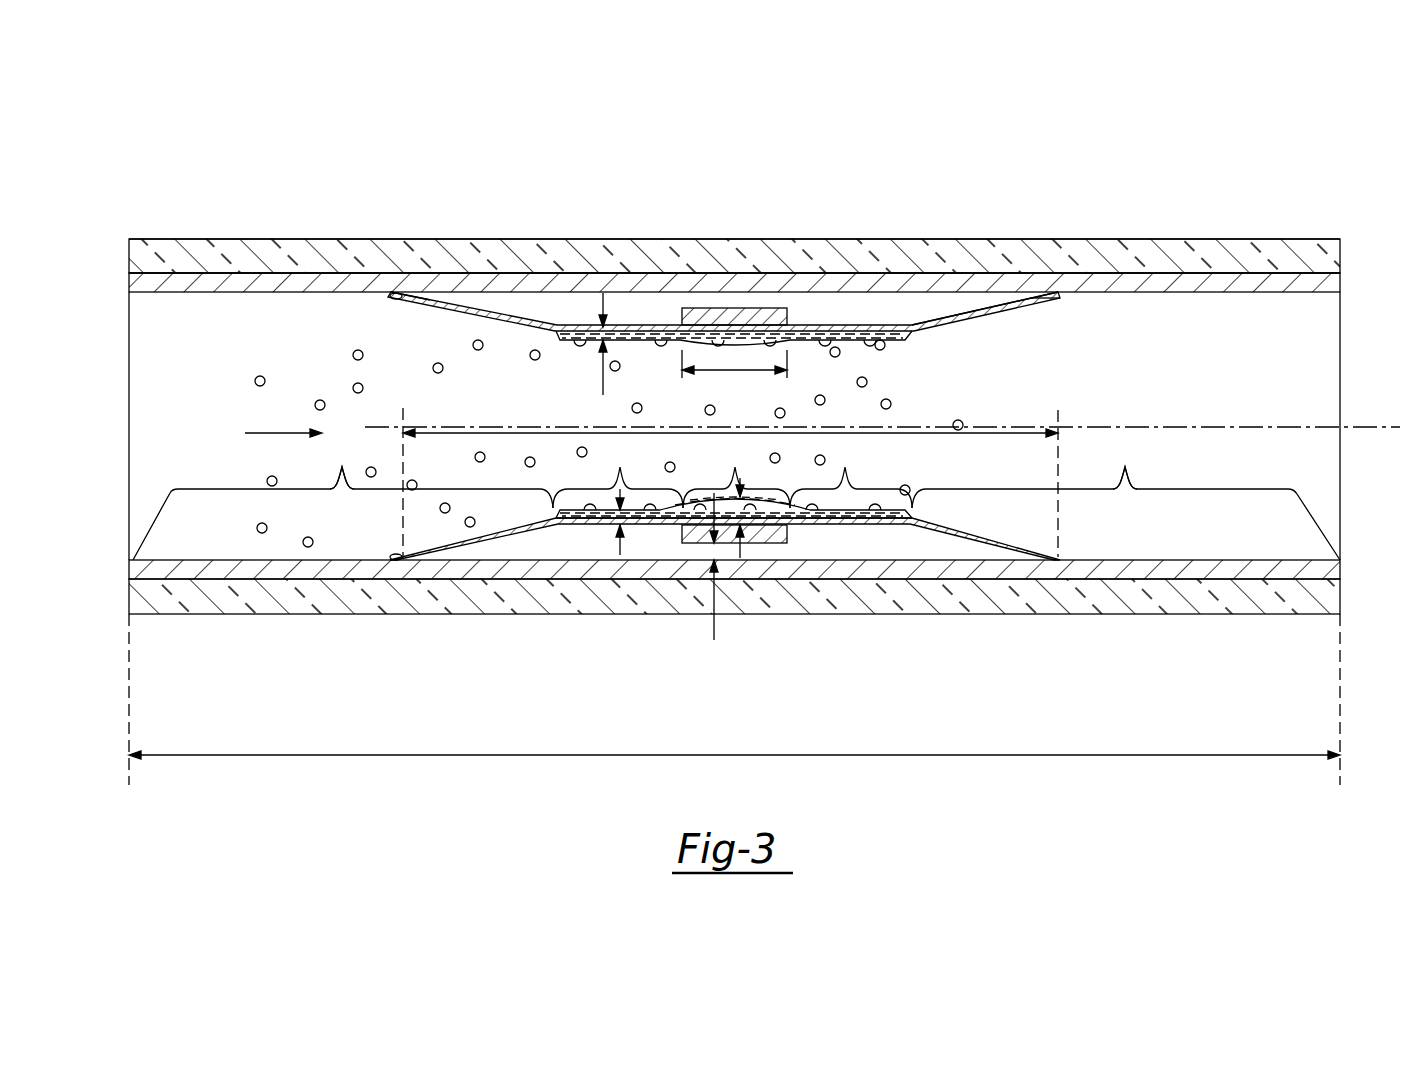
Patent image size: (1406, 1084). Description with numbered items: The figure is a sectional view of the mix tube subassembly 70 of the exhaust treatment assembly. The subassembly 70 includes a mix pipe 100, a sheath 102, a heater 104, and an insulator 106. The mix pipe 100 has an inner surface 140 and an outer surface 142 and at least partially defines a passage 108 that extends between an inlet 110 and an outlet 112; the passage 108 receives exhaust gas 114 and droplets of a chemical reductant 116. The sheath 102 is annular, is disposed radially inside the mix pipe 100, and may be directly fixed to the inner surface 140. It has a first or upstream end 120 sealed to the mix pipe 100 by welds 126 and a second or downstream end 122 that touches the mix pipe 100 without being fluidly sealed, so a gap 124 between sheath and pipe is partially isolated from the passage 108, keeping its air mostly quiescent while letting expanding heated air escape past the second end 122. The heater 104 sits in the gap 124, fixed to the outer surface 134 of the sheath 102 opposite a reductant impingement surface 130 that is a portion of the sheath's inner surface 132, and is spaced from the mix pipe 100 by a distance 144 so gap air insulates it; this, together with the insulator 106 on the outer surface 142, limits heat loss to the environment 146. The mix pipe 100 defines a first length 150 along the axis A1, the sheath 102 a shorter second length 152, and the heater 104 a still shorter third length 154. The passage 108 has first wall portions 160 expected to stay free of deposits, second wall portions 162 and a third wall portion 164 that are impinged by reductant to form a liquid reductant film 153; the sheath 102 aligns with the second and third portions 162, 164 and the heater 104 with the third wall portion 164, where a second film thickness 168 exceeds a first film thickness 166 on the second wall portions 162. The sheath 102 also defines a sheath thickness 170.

The mix tube subassembly 70 is at (1262, 118).
The mix pipe 100 is at (238, 278).
The sheath 102 is at (500, 305).
The heater 104 is at (730, 312).
The insulator 106 is at (858, 256).
The passage 108 is at (1118, 323).
The inlet 110 is at (125, 333).
The outlet 112 is at (1343, 320).
The exhaust gas 114 is at (258, 436).
The chemical reductant 116 is at (256, 378).
The first end 120 is at (398, 300).
The second end 122 is at (1058, 300).
The gap 124 is at (910, 308).
The welds 126 is at (395, 299).
The reductant impingement surface 130 is at (870, 340).
The inner surface 132 is at (446, 540).
The outer surface 134 is at (515, 528).
The inner surface 140 is at (145, 556).
The outer surface 142 is at (175, 596).
The distance 144 is at (715, 625).
The environment 146 is at (932, 697).
The first length 150 is at (332, 757).
The second length 152 is at (938, 432).
The liquid reductant film 153 is at (870, 489).
The third length 154 is at (718, 375).
The first wall portions 160 is at (731, 464).
The second wall portions 162 is at (732, 474).
The third wall portion 164 is at (736, 499).
The first film thickness 166 is at (618, 545).
The second film thickness 168 is at (740, 555).
The sheath thickness 170 is at (600, 372).
The axis A1 is at (1355, 427).